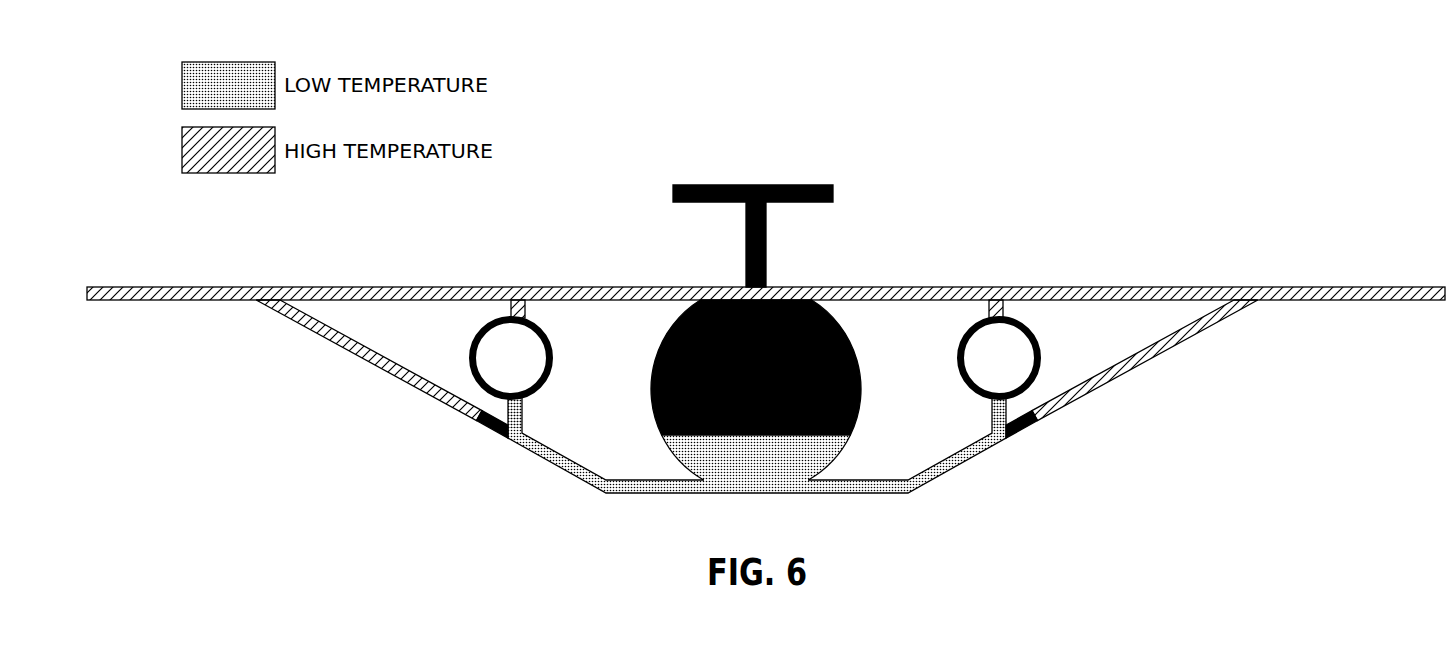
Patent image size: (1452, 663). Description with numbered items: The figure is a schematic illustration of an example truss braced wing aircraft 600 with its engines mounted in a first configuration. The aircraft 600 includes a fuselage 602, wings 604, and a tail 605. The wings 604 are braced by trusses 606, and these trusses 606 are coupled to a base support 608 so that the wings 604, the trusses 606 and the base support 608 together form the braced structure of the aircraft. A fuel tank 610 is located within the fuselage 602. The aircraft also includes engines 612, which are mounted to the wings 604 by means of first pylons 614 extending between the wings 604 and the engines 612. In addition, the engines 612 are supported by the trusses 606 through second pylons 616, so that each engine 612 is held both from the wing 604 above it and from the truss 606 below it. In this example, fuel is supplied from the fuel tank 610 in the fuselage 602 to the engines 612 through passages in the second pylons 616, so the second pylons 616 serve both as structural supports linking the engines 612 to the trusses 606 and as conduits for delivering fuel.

The truss braced wing aircraft 600 is at (1157, 187).
The fuselage 602 is at (859, 370).
The wings 604 is at (170, 286).
The tail 605 is at (768, 272).
The trusses 606 is at (327, 339).
The base support 608 is at (790, 495).
The fuel tank 610 is at (845, 447).
The engines 612 is at (550, 377).
The first pylons 614 is at (525, 307).
The second pylons 616 is at (522, 422).